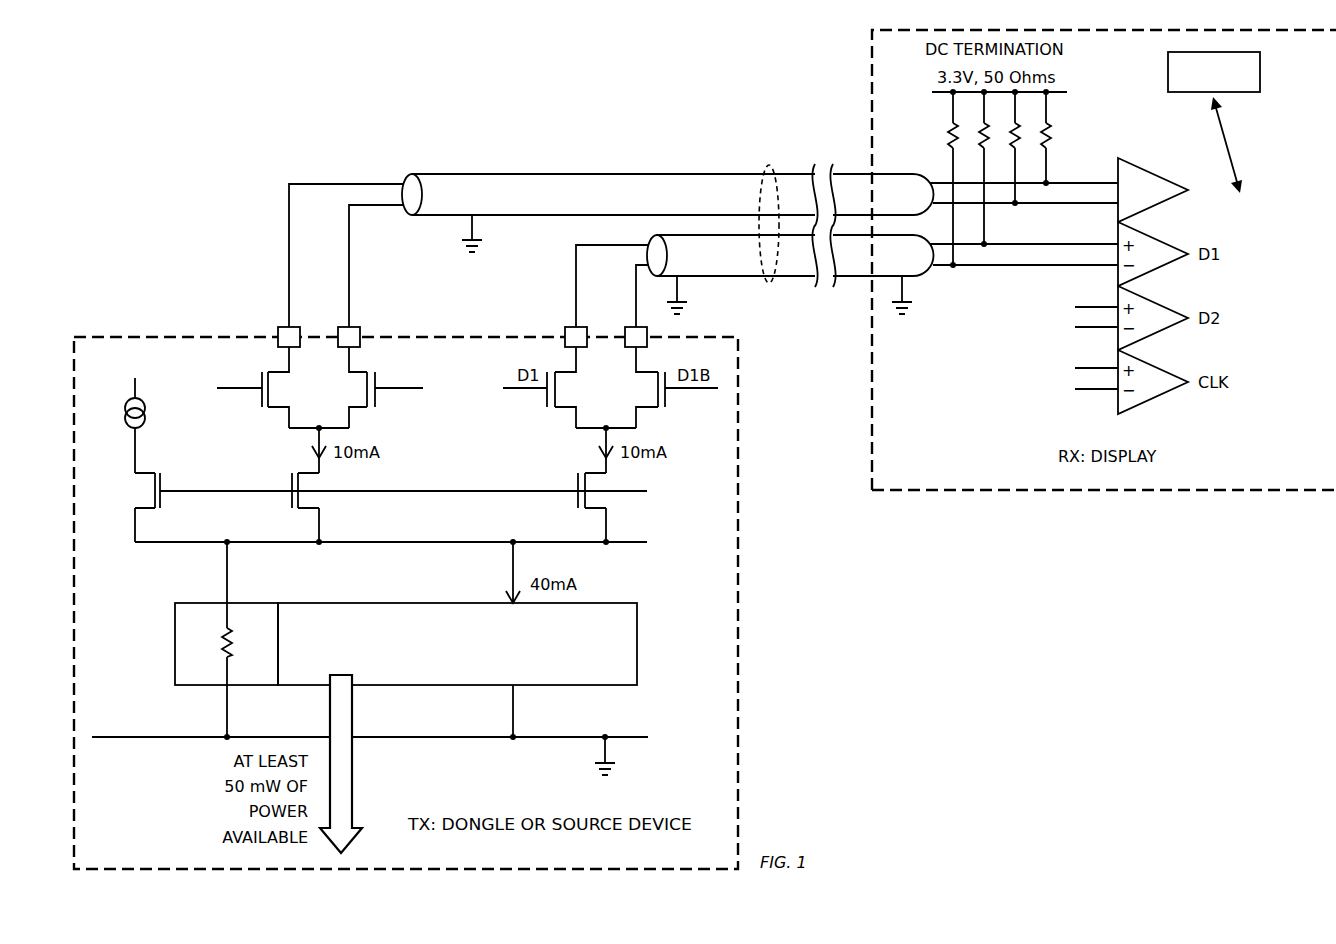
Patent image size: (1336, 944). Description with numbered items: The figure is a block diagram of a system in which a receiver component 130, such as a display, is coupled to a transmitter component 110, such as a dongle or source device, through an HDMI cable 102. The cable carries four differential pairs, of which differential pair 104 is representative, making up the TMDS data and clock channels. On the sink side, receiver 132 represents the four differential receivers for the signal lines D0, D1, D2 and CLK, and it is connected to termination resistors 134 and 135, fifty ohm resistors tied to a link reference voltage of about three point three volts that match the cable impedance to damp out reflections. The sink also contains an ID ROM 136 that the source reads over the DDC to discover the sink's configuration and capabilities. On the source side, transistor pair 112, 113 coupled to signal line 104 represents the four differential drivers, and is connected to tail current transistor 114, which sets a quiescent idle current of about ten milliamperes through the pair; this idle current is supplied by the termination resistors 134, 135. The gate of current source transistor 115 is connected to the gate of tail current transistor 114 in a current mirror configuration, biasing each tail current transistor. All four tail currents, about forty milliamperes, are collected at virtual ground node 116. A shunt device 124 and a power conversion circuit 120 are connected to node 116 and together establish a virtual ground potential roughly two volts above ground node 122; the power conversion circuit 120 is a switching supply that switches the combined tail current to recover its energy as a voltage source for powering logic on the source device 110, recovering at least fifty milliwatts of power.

The HDMI cable 102 is at (768, 165).
The differential pair 104 is at (563, 174).
The transmitter component 110 is at (748, 729).
The transistor 112 is at (257, 396).
The transistor 113 is at (380, 396).
The tail current transistor 114 is at (290, 481).
The current source transistor 115 is at (163, 501).
The virtual ground node 116 is at (372, 545).
The power conversion circuit 120 is at (638, 643).
The ground node 122 is at (125, 741).
The shunt device 124 is at (175, 646).
The receiver component 130 is at (1141, 496).
The receiver 132 is at (1155, 172).
The termination resistor 134 is at (1052, 130).
The termination resistor 135 is at (1023, 140).
The ID ROM 136 is at (1262, 73).